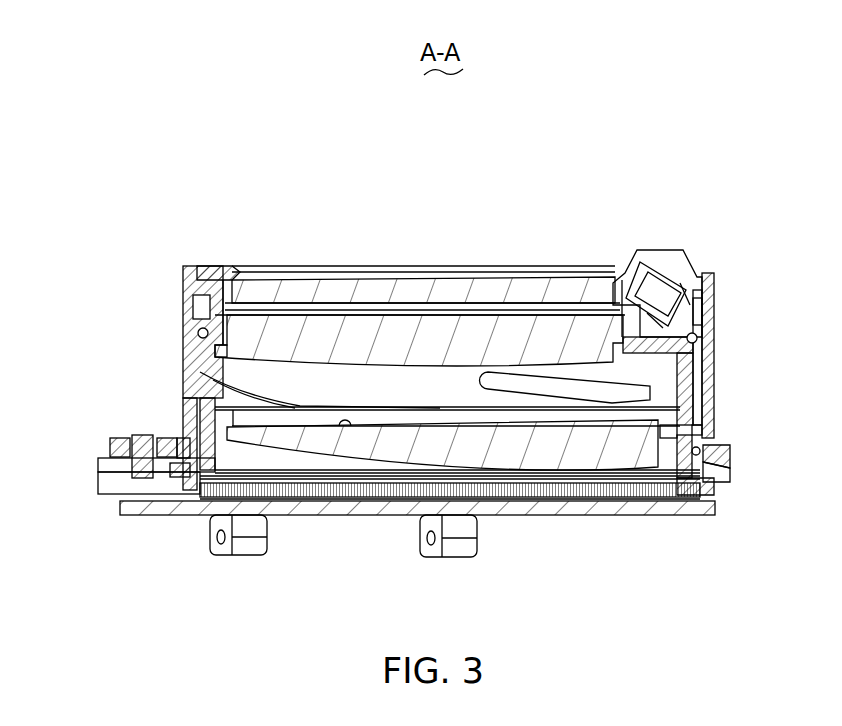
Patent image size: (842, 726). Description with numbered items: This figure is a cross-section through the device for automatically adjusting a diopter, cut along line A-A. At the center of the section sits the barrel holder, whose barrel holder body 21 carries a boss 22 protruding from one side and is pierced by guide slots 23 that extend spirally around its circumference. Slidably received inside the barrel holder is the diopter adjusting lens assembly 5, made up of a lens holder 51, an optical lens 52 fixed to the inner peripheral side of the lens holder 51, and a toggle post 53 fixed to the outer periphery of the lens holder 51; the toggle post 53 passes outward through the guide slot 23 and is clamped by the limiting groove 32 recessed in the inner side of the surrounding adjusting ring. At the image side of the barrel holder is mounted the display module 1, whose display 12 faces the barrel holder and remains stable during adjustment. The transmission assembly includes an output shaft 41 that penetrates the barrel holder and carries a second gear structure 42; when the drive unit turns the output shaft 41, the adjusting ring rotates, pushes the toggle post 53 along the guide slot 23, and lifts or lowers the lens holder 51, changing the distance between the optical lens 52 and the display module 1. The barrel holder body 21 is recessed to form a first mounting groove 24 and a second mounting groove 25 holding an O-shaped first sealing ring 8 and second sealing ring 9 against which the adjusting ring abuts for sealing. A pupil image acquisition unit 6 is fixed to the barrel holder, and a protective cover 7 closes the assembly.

The display module 1 is at (212, 516).
The diopter adjusting lens assembly 5 is at (495, 526).
The pupil image acquisition unit 6 is at (675, 280).
The protective cover 7 is at (590, 275).
The first sealing ring 8 is at (697, 467).
The second sealing ring 9 is at (697, 338).
The display 12 is at (562, 483).
The barrel holder body 21 is at (640, 365).
The boss 22 is at (100, 462).
The guide slot 23 is at (597, 397).
The first mounting groove 24 is at (692, 437).
The second mounting groove 25 is at (700, 320).
The limiting groove 32 is at (700, 403).
The output shaft 41 is at (130, 487).
The second gear structure 42 is at (122, 438).
The lens holder 51 is at (664, 427).
The optical lens 52 is at (593, 452).
The toggle post 53 is at (712, 430).